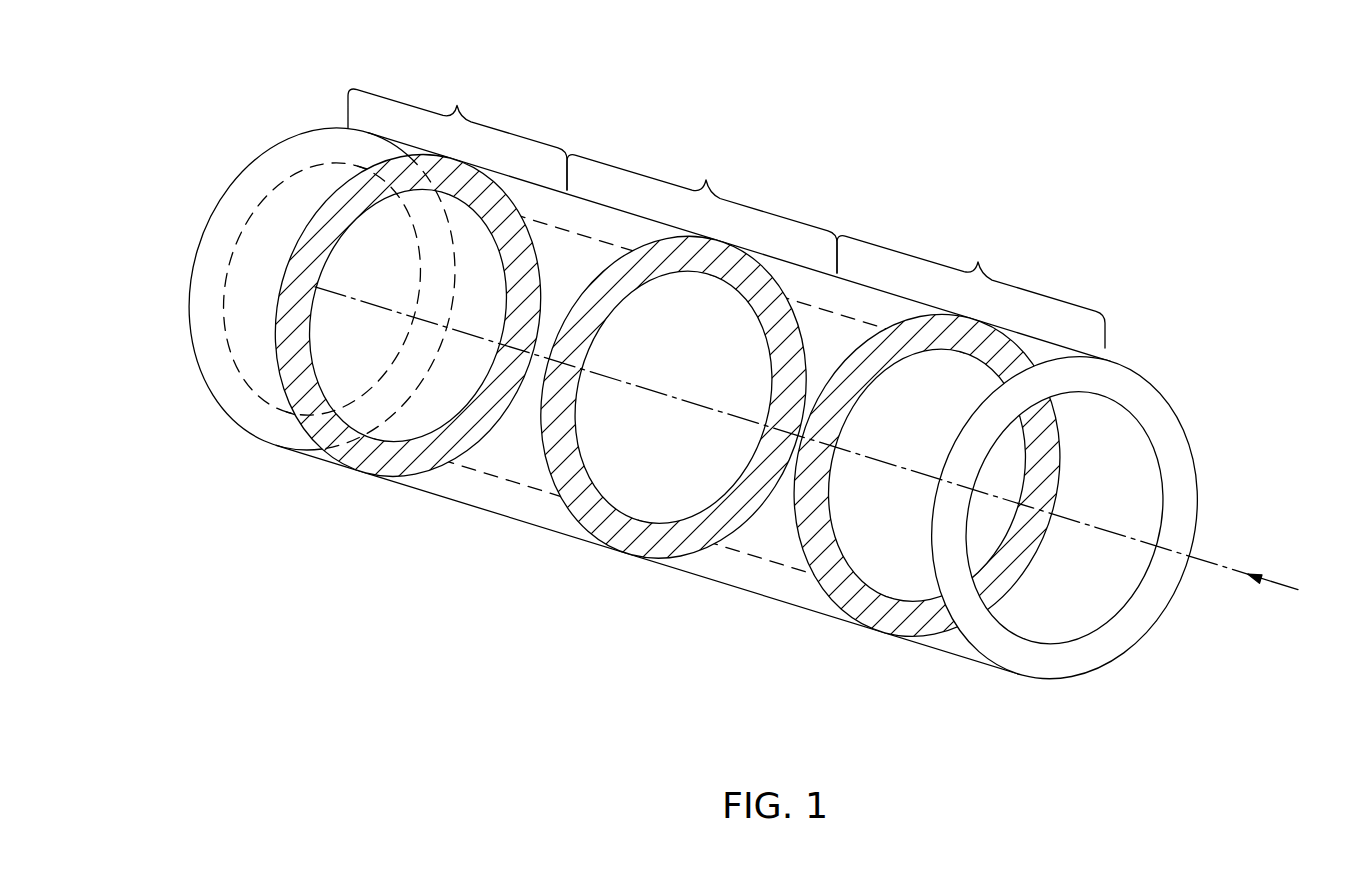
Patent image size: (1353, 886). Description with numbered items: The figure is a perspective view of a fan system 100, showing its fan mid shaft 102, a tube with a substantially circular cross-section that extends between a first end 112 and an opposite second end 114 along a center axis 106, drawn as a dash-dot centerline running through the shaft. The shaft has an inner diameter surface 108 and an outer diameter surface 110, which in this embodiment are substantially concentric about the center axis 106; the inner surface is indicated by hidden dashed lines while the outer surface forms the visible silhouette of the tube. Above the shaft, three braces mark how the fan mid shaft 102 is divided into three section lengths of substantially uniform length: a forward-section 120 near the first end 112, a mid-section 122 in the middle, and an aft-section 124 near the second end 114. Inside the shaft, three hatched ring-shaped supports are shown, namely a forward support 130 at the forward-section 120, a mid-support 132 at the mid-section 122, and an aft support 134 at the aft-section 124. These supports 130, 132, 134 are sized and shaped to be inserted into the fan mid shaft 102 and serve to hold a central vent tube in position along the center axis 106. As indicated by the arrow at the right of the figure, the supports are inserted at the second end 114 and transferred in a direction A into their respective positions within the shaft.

The fan system 100 is at (735, 401).
The fan mid shaft 102 is at (1153, 382).
The center axis 106 is at (1235, 570).
The inner diameter surface 108 is at (1053, 632).
The outer diameter surface 110 is at (953, 654).
The first end 112 is at (222, 201).
The second end 114 is at (1173, 428).
The forward-section 120 is at (458, 104).
The mid-section 122 is at (706, 179).
The aft-section 124 is at (978, 261).
The forward support 130 is at (328, 451).
The mid-support 132 is at (608, 538).
The aft support 134 is at (837, 613).
The direction A is at (1277, 584).